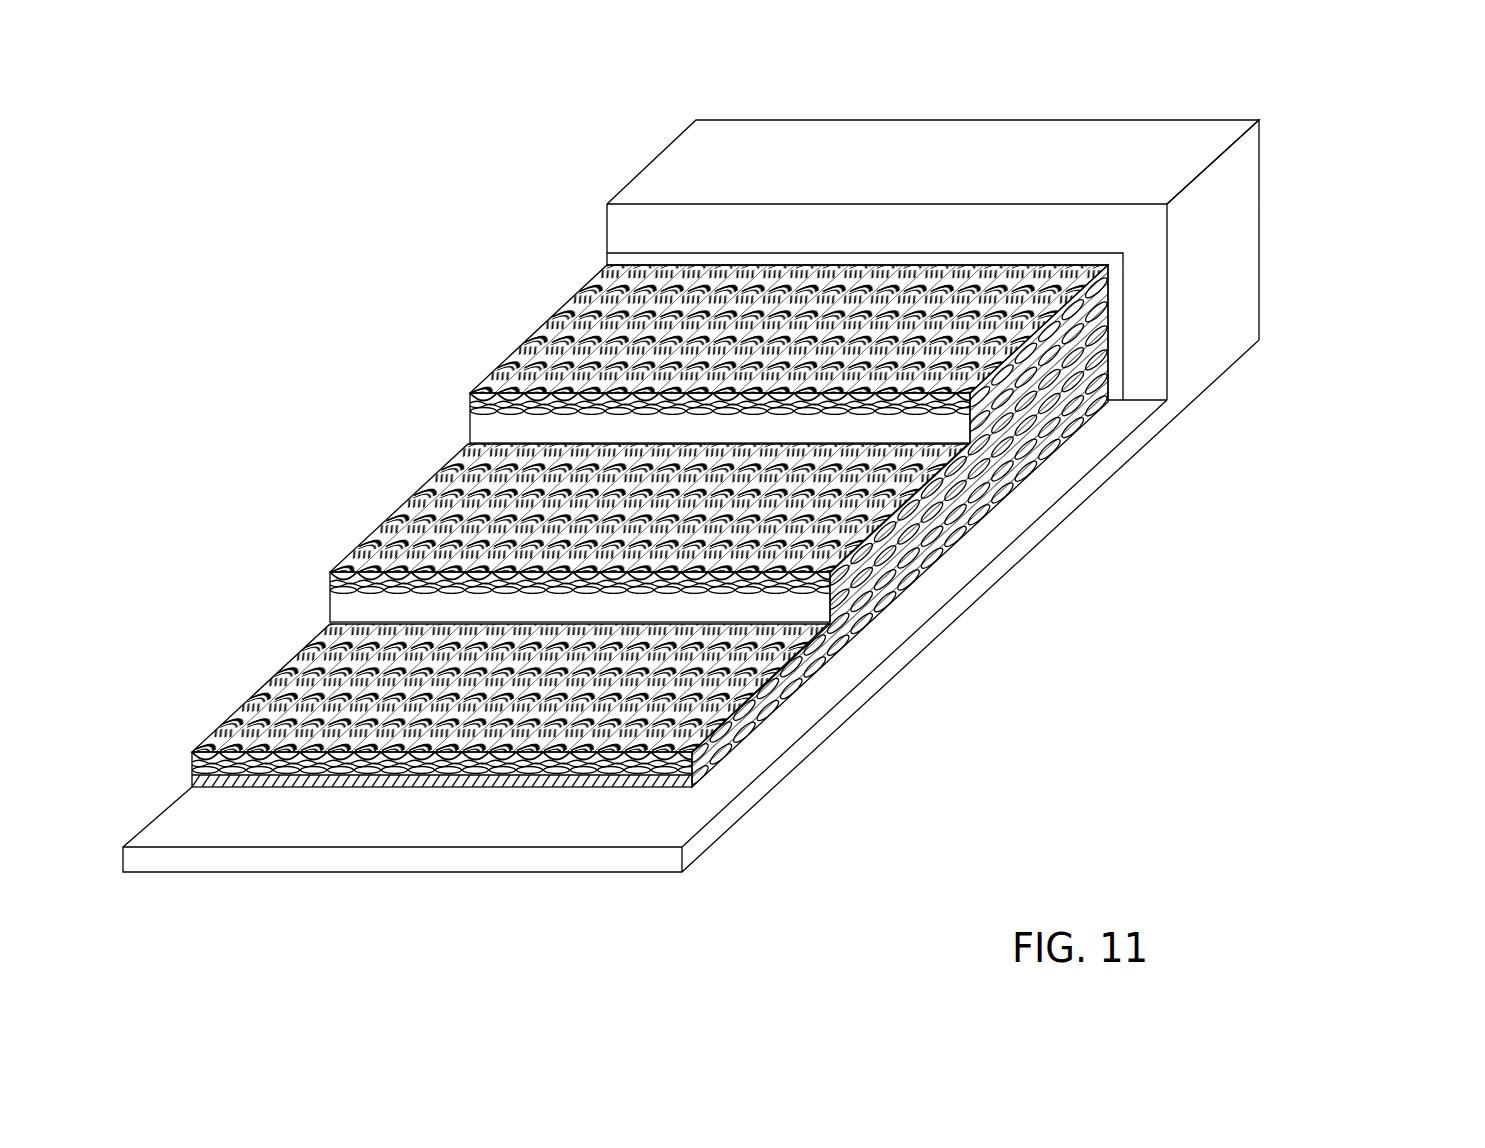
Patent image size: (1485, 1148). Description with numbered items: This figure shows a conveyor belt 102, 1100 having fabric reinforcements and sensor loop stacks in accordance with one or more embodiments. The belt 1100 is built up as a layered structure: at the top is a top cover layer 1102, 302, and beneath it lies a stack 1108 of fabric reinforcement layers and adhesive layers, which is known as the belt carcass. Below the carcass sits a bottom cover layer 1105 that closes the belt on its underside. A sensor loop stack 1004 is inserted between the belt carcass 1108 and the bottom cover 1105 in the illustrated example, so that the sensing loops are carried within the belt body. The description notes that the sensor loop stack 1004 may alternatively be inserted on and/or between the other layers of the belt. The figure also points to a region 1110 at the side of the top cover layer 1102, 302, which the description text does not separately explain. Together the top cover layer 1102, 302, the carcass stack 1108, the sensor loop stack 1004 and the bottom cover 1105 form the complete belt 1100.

The conveyor belt 1100 is at (430, 119).
The conveyor belt 102 is at (784, 495).
The top cover layer 1102 is at (798, 105).
The top cover layer 302 is at (933, 260).
The housing side wall 1110 is at (1279, 152).
The stack 1108 is at (1083, 427).
The sensor loop stack 1004 is at (951, 552).
The bottom cover layer 1105 is at (343, 885).